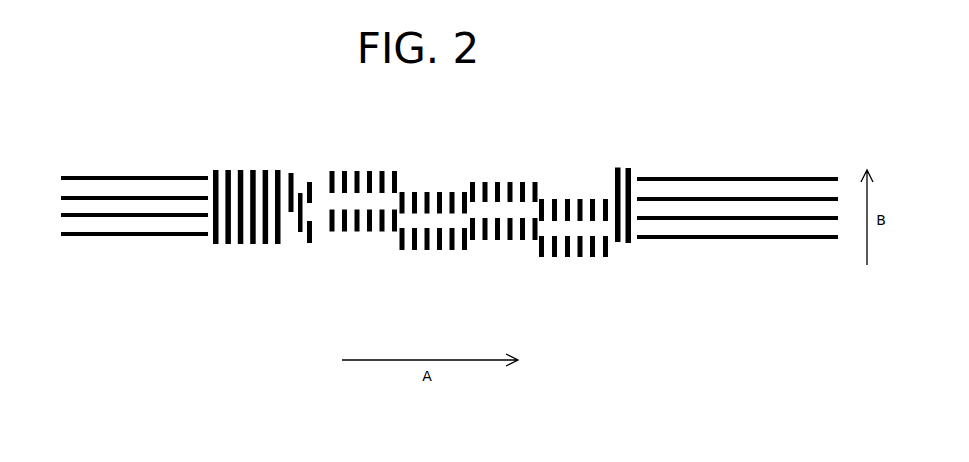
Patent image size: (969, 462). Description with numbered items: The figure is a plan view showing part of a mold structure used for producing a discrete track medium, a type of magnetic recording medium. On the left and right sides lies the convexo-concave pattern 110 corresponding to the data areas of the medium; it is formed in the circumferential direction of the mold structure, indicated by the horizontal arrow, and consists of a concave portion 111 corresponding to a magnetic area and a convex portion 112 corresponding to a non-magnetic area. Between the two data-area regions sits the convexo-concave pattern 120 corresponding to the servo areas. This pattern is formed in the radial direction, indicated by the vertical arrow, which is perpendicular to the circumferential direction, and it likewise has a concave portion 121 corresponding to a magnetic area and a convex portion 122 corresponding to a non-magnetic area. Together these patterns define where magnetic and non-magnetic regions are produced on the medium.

The convexo-concave pattern corresponding to data areas 110 is at (63, 257).
The concave portion 111 is at (75, 177).
The convex portion 112 is at (108, 187).
The convexo-concave pattern corresponding to servo areas 120 is at (213, 258).
The concave portion 121 is at (216, 170).
The convex portion 122 is at (226, 170).